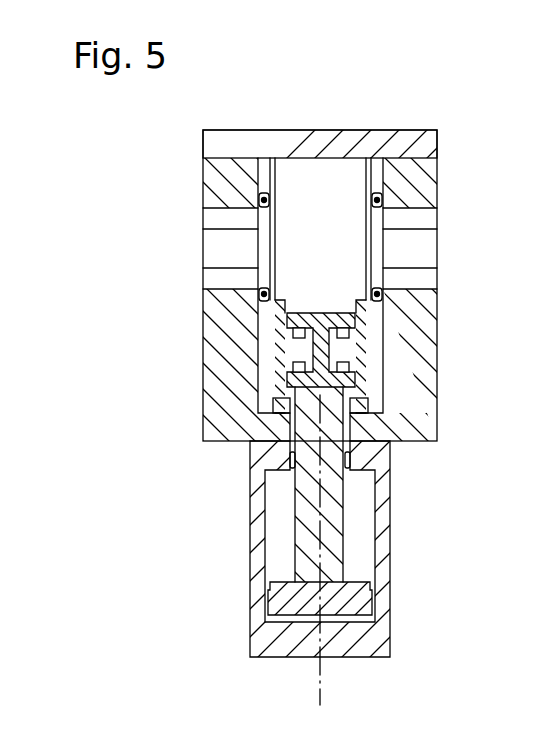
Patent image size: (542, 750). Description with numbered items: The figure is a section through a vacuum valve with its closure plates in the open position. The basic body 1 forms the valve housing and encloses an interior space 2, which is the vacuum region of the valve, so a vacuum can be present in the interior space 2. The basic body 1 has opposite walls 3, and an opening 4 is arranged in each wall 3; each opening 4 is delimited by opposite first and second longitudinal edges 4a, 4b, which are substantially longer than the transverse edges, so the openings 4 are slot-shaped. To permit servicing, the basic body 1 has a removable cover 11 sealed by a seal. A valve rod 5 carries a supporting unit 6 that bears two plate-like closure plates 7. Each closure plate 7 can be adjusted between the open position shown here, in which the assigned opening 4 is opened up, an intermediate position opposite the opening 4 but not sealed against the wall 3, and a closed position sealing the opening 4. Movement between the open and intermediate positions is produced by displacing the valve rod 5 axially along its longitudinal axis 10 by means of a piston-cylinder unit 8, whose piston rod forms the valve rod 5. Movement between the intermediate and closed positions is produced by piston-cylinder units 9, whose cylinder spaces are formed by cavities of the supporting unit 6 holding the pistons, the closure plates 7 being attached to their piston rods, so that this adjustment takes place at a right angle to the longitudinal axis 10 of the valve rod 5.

The basic body 1 is at (199, 422).
The interior space 2 is at (297, 190).
The walls 3 is at (216, 190).
The opening 4 is at (217, 252).
The first longitudinal edge 4a is at (225, 208).
The second longitudinal edge 4b is at (226, 274).
The valve rod 5 is at (335, 470).
The supporting unit 6 is at (292, 393).
The closure plates 7 is at (267, 338).
The piston-cylinder unit 8 is at (249, 608).
The piston-cylinder units 9 is at (304, 311).
The longitudinal axis 10 is at (320, 583).
The removable cover 11 is at (241, 141).